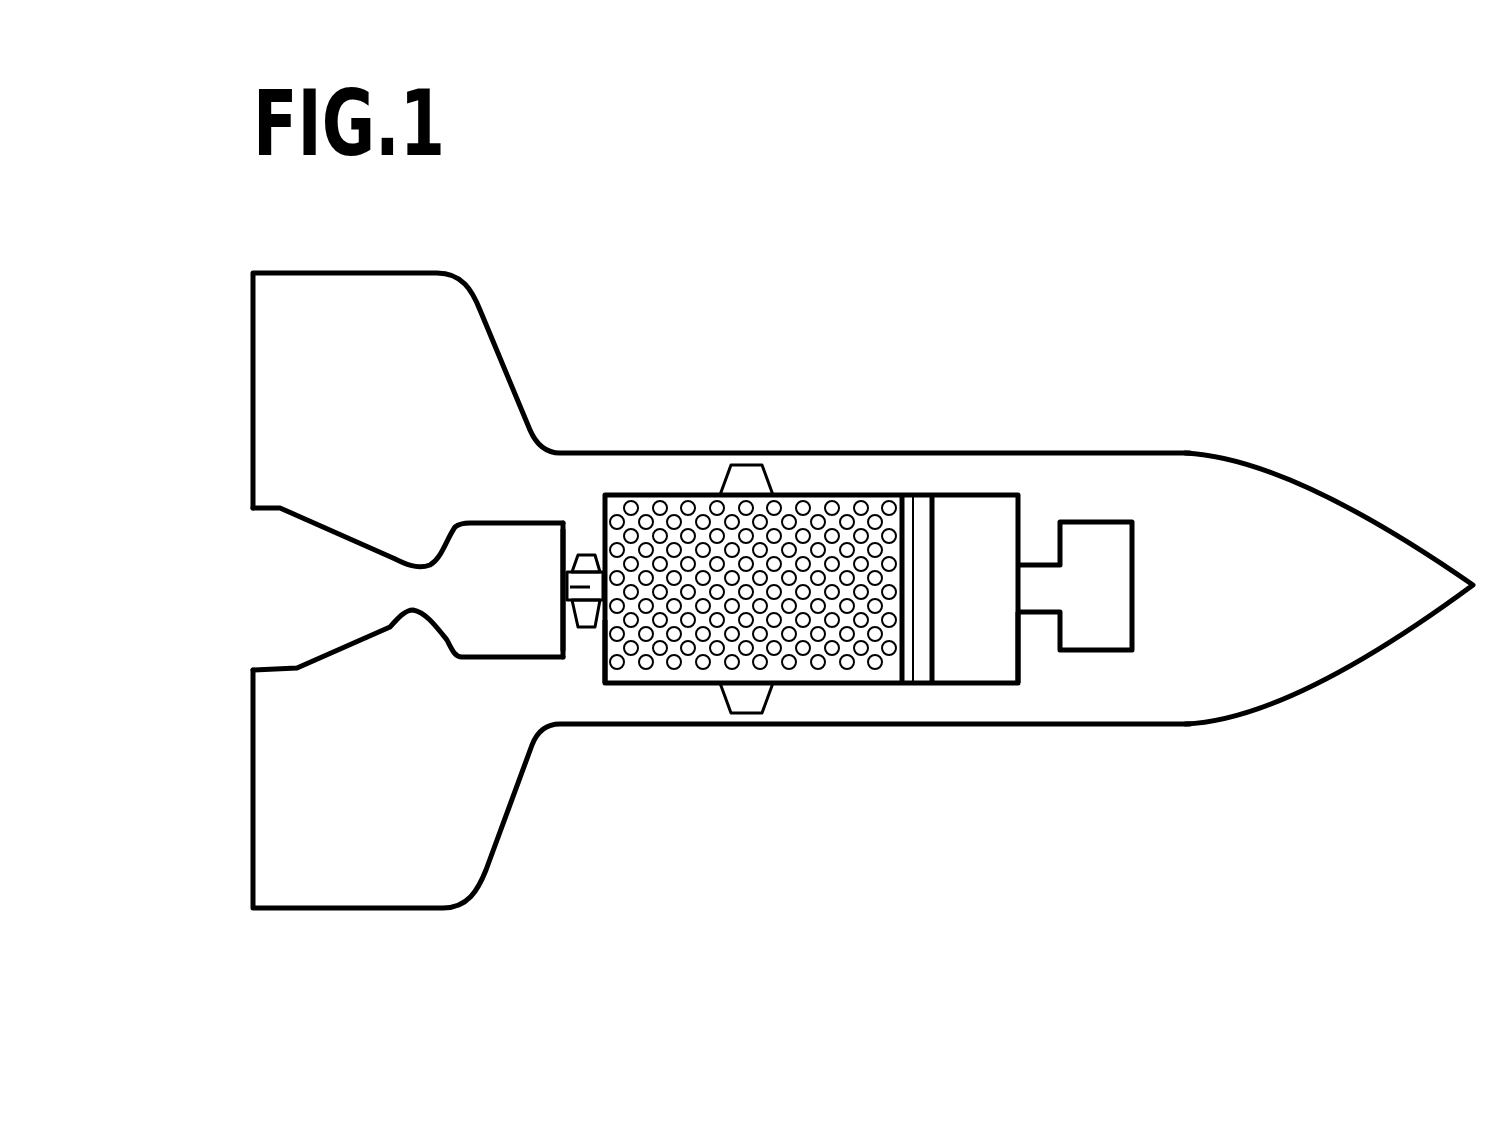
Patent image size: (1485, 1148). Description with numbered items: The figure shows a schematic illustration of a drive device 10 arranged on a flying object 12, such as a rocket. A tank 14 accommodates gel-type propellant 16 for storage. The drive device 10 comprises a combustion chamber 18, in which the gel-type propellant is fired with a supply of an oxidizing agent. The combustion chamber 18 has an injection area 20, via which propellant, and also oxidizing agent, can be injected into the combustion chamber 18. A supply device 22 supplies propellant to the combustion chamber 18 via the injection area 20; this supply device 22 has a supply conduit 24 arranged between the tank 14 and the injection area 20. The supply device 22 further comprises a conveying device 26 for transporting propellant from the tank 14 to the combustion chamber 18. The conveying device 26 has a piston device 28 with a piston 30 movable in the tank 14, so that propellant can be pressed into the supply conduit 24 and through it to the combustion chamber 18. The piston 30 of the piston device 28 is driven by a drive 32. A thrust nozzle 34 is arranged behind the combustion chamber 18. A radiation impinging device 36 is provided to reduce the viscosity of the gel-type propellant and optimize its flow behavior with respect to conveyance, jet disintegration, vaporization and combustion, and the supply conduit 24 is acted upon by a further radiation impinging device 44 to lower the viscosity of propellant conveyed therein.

The drive device 10 is at (862, 748).
The flying object 12 is at (1177, 500).
The tank 14 is at (756, 550).
The gel-type propellant 16 is at (788, 565).
The combustion chamber 18 is at (520, 585).
The injection area 20 is at (563, 643).
The supply device 22 is at (676, 428).
The supply conduit 24 is at (580, 560).
The conveying device 26 is at (1058, 716).
The piston device 28 is at (970, 400).
The piston 30 is at (913, 628).
The drive 32 is at (1108, 610).
The thrust nozzle 34 is at (313, 663).
The radiation impinging device 36 is at (749, 470).
The radiation impinging device 44 is at (610, 627).